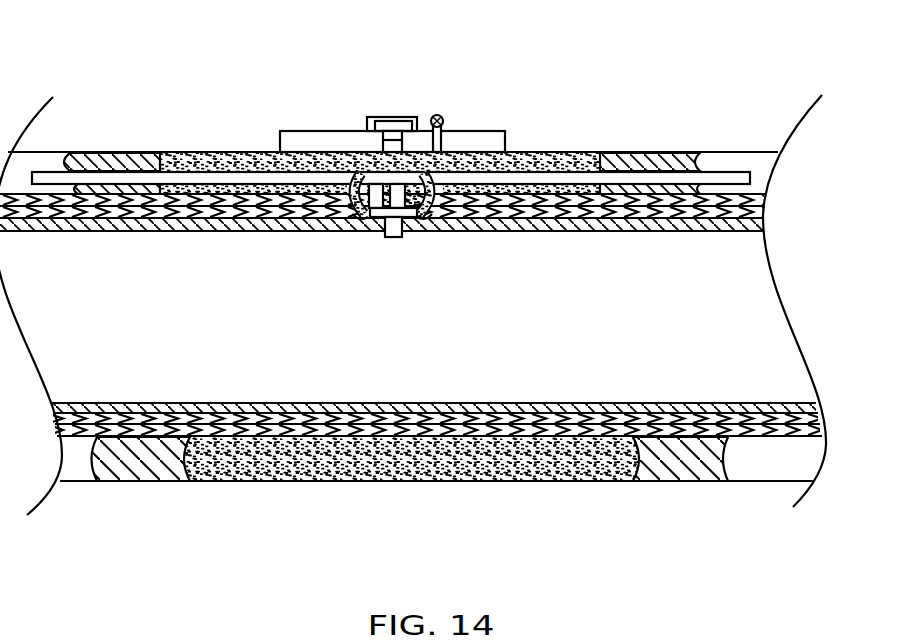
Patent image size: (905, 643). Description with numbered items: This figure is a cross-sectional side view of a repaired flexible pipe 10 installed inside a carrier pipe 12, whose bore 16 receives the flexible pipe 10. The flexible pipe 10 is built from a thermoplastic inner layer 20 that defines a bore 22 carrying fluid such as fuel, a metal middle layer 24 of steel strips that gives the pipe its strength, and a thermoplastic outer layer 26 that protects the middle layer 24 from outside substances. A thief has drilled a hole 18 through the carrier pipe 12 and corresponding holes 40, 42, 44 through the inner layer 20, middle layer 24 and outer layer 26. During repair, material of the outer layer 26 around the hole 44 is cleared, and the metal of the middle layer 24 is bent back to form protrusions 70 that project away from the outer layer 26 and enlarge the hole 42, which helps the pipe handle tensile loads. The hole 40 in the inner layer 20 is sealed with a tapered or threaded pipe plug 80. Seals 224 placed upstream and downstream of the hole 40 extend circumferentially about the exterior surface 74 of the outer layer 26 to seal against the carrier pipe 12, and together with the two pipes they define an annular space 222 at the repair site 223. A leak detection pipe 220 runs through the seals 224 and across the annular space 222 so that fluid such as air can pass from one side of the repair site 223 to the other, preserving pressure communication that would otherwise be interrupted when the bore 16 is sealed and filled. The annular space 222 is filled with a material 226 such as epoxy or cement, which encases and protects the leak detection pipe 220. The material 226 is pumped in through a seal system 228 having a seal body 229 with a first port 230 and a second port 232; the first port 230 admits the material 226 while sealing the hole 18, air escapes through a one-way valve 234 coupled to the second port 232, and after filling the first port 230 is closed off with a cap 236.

The flexible pipe 10 is at (815, 343).
The carrier pipe 12 is at (265, 482).
The bore 16 is at (746, 475).
The hole 18 is at (480, 124).
The inner layer 20 is at (617, 223).
The bore 22 is at (136, 324).
The middle layer 24 is at (668, 213).
The outer layer 26 is at (712, 200).
The hole 40 is at (408, 232).
The hole 42 is at (358, 226).
The hole 44 is at (447, 220).
The protrusions 70 is at (350, 214).
The exterior surface 74 is at (200, 195).
The pipe plug 80 is at (392, 238).
The leak detection pipe 220 is at (193, 180).
The annular space 222 is at (397, 463).
The repair site 223 is at (610, 530).
The seals 224 is at (133, 465).
The material 226 is at (513, 455).
The seal system 228 is at (333, 84).
The seal body 229 is at (505, 142).
The first port 230 is at (375, 142).
The second port 232 is at (442, 140).
The valve 234 is at (434, 115).
The cap 236 is at (380, 117).